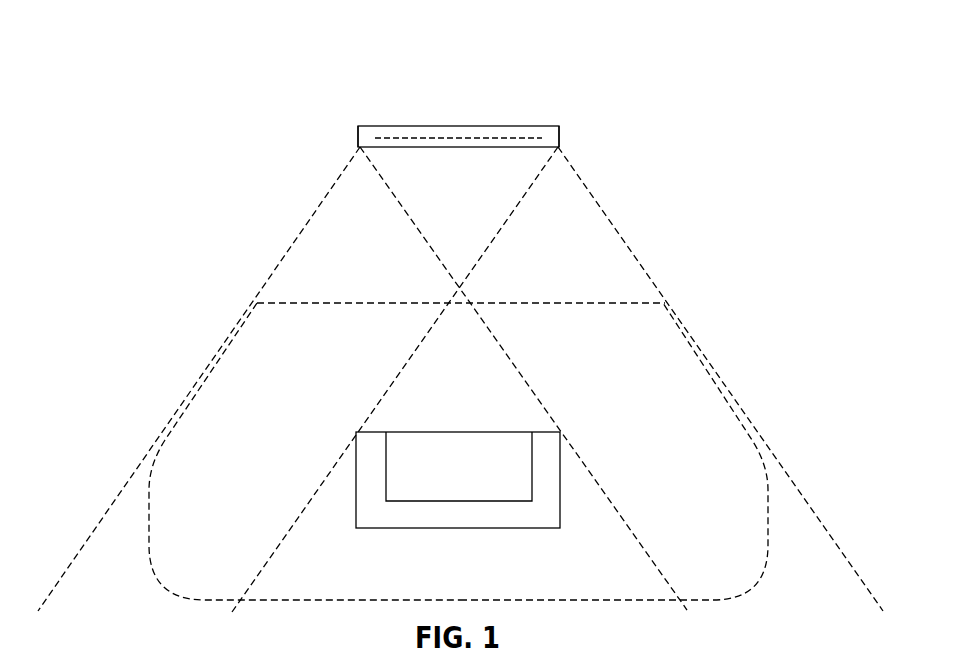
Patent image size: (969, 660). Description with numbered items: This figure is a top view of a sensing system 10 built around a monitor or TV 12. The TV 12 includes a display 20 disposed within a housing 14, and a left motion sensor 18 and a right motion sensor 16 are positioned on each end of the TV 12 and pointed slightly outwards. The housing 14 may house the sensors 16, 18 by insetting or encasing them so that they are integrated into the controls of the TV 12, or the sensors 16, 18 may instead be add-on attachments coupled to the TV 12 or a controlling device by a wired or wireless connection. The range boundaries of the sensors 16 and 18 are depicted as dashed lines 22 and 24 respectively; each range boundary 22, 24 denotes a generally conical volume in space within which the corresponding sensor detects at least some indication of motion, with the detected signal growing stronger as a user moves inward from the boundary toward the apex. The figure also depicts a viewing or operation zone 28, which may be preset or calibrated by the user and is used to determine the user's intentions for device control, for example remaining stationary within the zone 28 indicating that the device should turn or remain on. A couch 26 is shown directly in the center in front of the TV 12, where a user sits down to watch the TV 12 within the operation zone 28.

The sensing system 10 is at (240, 56).
The TV 12 is at (359, 126).
The housing 14 is at (559, 126).
The right motion sensor 16 is at (559, 147).
The left motion sensor 18 is at (359, 148).
The display 20 is at (470, 137).
The range boundary 22 is at (677, 288).
The range boundary 24 is at (227, 340).
The couch 26 is at (520, 528).
The viewing or operation zone 28 is at (735, 585).